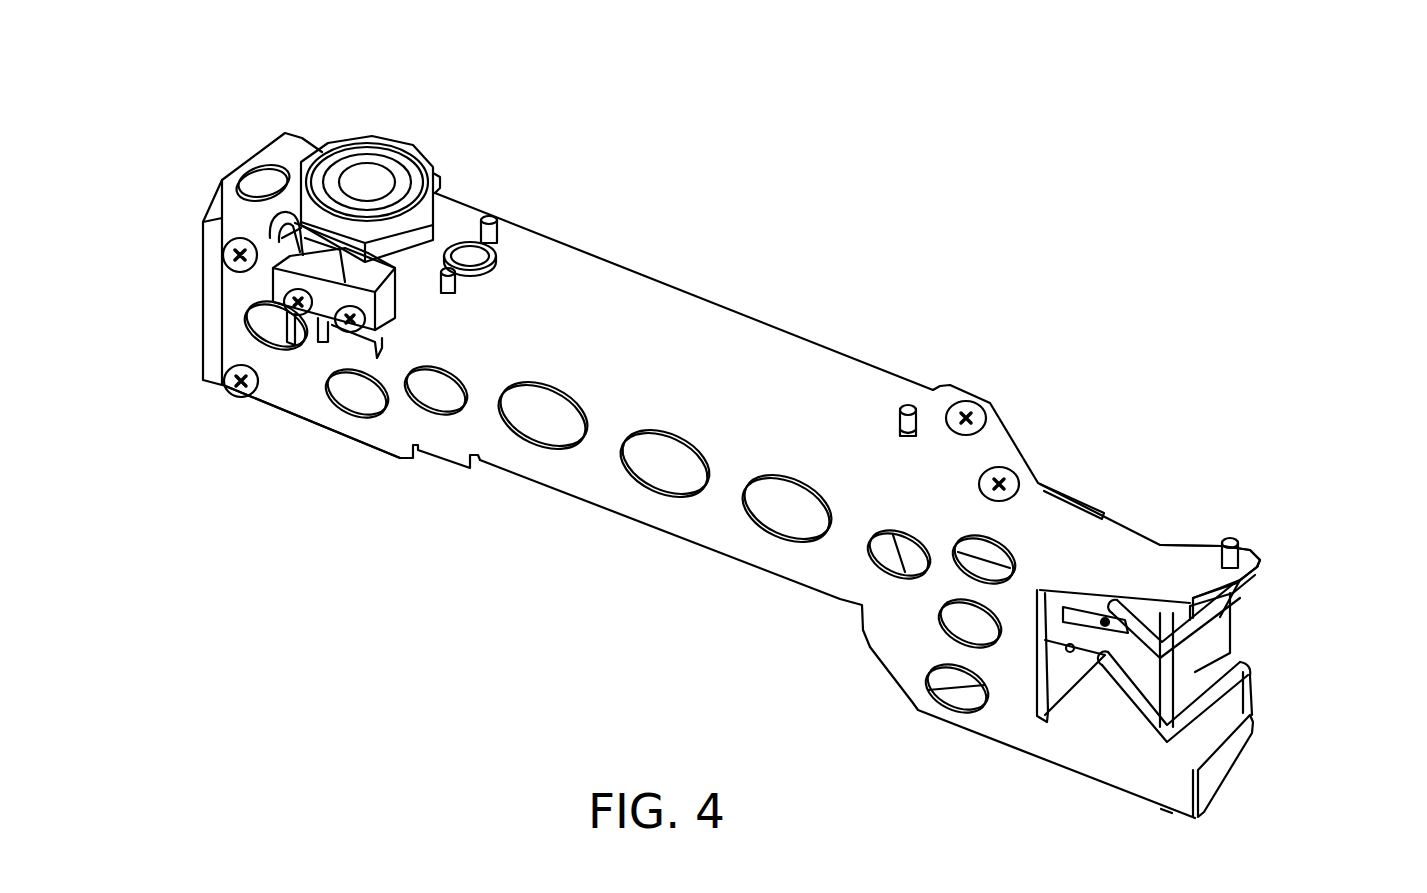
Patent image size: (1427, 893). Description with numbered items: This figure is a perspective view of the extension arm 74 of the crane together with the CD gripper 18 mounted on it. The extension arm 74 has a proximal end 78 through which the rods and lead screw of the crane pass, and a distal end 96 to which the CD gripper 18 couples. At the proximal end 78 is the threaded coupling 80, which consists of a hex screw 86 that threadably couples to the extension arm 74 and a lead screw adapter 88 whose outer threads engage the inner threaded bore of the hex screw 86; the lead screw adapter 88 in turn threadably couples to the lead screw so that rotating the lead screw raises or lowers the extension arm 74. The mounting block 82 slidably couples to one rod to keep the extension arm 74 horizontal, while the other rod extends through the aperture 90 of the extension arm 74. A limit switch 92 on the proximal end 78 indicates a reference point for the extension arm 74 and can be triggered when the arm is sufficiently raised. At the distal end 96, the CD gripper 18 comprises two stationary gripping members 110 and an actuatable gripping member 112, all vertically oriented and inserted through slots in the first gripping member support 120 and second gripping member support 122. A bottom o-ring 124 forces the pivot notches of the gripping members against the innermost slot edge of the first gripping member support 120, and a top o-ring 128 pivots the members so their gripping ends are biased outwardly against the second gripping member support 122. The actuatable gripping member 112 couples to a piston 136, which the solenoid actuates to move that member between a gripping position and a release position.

The CD gripper 18 is at (1134, 500).
The extension arm 74 is at (693, 337).
The proximal end 78 is at (308, 412).
The threaded coupling 80 is at (413, 140).
The mounting block 82 is at (203, 263).
The hex screw 86 is at (433, 164).
The lead screw adapter 88 is at (358, 158).
The aperture 90 is at (500, 264).
The limit switch 92 is at (282, 283).
The distal end 96 is at (1150, 560).
The stationary gripping members 110 is at (1220, 635).
The actuatable gripping member 112 is at (1137, 667).
The first gripping member support 120 is at (1217, 707).
The second gripping member support 122 is at (1210, 777).
The bottom o-ring 124 is at (1253, 668).
The top o-ring 128 is at (1233, 598).
The piston 136 is at (1097, 563).